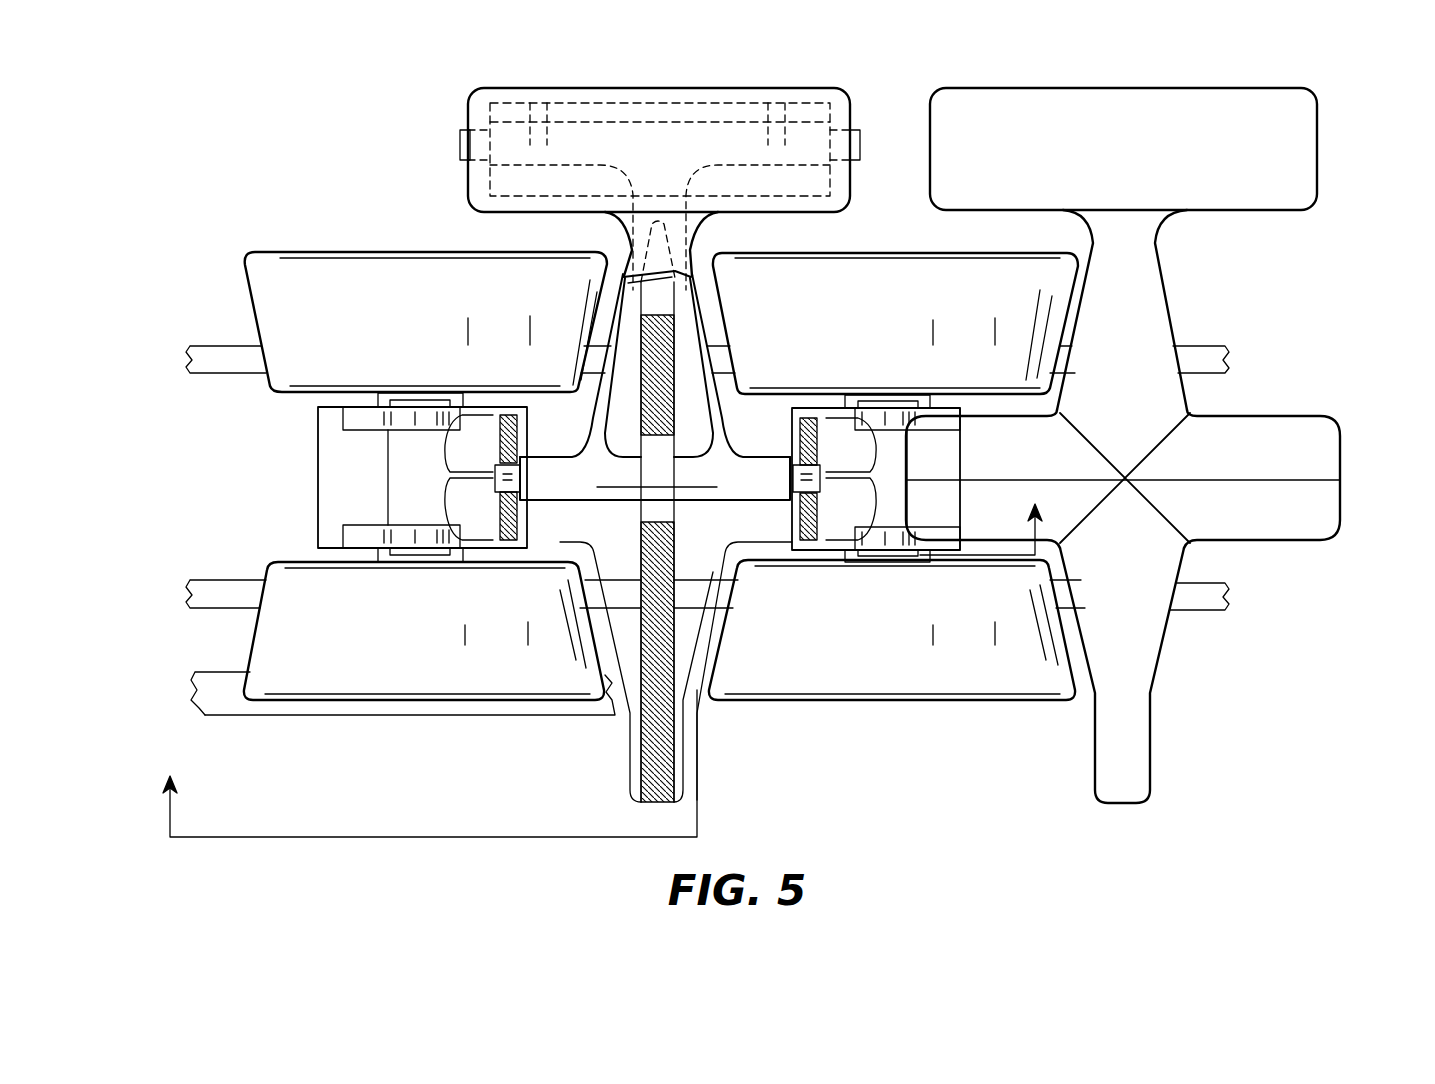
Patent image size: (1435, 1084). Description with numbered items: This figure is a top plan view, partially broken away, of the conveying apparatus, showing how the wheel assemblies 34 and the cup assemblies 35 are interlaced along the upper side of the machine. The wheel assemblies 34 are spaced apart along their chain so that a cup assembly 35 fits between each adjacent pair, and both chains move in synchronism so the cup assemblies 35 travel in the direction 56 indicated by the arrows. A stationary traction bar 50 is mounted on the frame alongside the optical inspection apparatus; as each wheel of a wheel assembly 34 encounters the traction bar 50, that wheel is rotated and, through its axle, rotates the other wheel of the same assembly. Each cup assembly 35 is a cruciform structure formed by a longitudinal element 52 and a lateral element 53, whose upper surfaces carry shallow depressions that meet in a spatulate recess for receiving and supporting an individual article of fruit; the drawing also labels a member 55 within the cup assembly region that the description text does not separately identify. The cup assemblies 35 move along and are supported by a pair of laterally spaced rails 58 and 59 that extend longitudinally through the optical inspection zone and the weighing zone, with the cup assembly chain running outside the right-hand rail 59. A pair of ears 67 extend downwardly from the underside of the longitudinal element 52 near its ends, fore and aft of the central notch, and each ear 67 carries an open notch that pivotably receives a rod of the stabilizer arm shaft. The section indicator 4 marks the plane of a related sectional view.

The wheel assembly 34 is at (200, 540).
The cup assembly 35 is at (1323, 354).
The traction bar 50 is at (228, 715).
The longitudinal element 52 is at (452, 508).
The lateral element 53 is at (695, 626).
The cross bar 55 is at (640, 502).
The direction 56 is at (604, 60).
The rail 58 is at (1195, 612).
The rail 59 is at (1195, 355).
The ear 67 is at (491, 418).
The section line 4- 4 is at (610, 660).